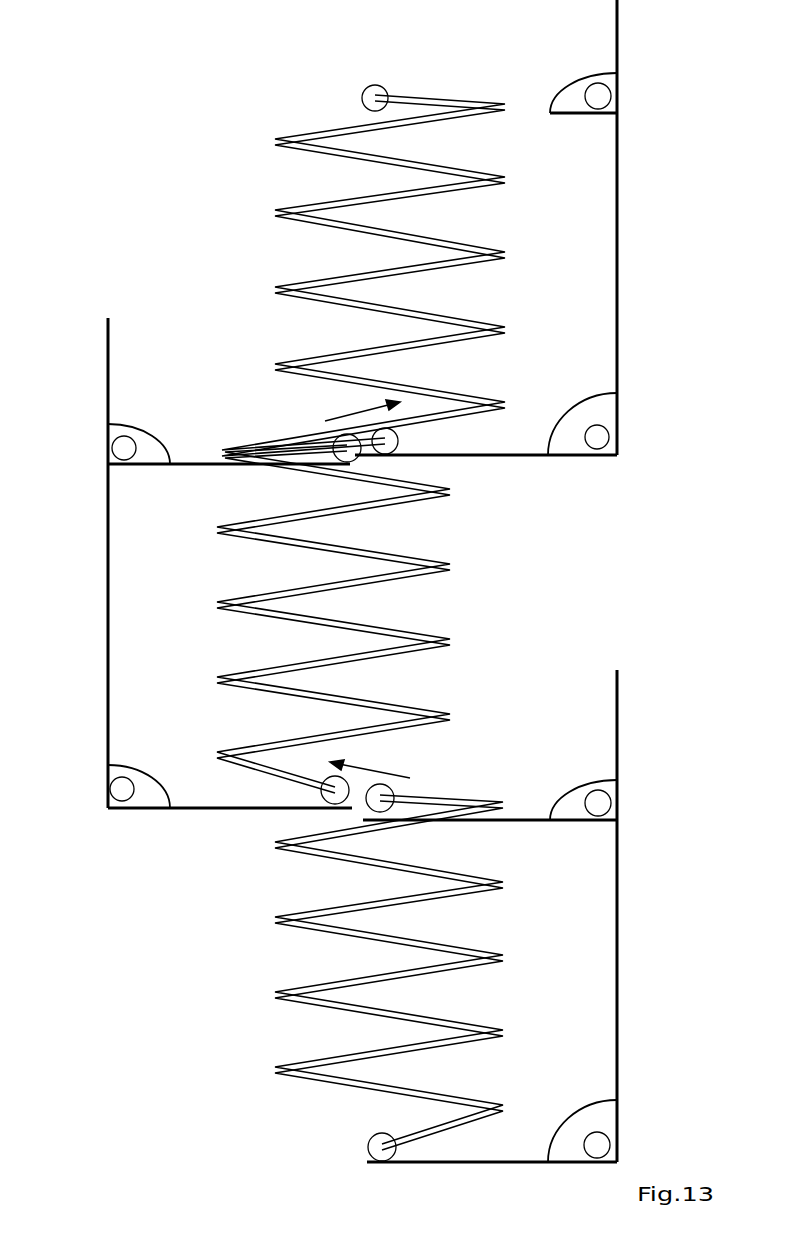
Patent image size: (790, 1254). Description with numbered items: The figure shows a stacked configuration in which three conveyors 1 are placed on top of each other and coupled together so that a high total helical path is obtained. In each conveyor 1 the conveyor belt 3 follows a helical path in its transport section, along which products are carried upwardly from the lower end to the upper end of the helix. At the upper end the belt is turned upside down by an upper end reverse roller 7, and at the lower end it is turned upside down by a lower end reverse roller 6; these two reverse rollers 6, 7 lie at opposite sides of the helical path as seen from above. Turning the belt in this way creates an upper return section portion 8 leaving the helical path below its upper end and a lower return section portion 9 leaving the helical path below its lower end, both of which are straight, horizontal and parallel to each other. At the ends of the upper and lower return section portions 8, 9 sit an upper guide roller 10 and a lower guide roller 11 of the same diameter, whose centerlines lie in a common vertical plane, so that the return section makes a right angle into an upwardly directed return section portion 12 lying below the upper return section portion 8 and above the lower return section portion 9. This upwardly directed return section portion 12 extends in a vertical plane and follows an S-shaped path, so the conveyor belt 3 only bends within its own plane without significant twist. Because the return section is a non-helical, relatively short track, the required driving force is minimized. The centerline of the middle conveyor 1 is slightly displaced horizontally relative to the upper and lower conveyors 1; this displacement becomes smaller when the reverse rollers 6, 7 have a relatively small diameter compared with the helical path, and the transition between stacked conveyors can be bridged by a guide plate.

The conveyor 1 is at (232, 100).
The conveyor belt 3 is at (290, 210).
The lower end reverse roller 6 is at (392, 441).
The upper end reverse roller 7 is at (372, 95).
The upper return section portion 8 is at (617, 73).
The lower return section portion 9 is at (617, 393).
The upper guide roller 10 is at (603, 97).
The lower guide roller 11 is at (605, 437).
The upwardly directed return section portion 12 is at (620, 228).